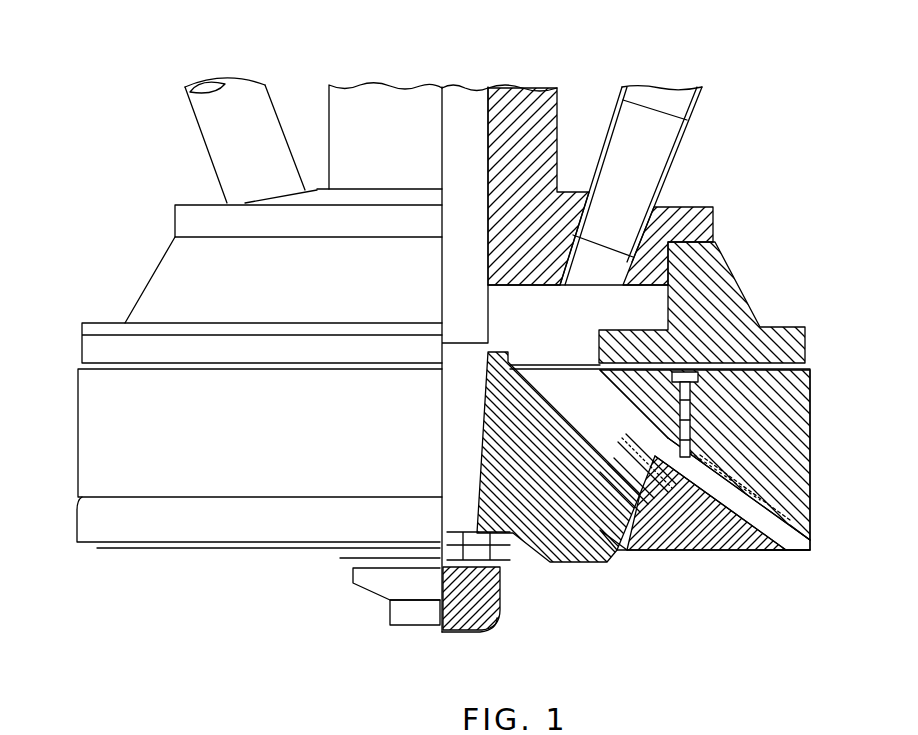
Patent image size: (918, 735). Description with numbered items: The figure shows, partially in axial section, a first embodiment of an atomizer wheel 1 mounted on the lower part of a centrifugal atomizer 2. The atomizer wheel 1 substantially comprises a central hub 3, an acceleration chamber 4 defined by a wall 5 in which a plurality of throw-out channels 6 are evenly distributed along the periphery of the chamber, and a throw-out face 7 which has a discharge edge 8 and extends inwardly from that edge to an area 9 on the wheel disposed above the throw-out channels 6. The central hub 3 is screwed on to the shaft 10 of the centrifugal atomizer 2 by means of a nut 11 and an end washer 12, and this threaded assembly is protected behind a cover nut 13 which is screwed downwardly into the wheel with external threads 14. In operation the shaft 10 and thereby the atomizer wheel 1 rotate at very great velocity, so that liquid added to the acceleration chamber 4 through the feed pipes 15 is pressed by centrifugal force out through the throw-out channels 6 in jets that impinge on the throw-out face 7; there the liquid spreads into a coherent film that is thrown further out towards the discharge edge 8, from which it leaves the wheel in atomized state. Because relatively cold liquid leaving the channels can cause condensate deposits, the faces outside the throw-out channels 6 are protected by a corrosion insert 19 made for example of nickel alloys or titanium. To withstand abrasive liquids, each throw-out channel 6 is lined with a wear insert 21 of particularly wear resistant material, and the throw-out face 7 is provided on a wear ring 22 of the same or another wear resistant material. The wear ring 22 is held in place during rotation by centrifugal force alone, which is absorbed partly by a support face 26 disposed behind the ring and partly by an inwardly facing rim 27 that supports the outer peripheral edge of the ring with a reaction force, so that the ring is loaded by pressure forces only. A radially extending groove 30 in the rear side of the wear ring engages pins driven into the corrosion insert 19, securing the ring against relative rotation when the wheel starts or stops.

The atomizer wheel 1 is at (60, 537).
The centrifugal atomizer 2 is at (538, 80).
The central hub 3 is at (490, 407).
The acceleration chamber 4 is at (589, 401).
The wall 5 is at (612, 555).
The throw-out channels 6 is at (690, 462).
The throw-out face 7 is at (745, 498).
The discharge edge 8 is at (795, 555).
The area 9 is at (700, 470).
The shaft 10 is at (458, 98).
The nut 11 is at (450, 568).
The end washer 12 is at (457, 533).
The cover nut 13 is at (423, 632).
The external threads 14 is at (530, 563).
The feed pipes 15 is at (657, 132).
The corrosion insert 19 is at (640, 512).
The wear insert 21 is at (635, 452).
The wear ring 22 is at (750, 545).
The support face 26 is at (806, 510).
The inwardly facing rim 27 is at (805, 548).
The groove 30 is at (780, 487).